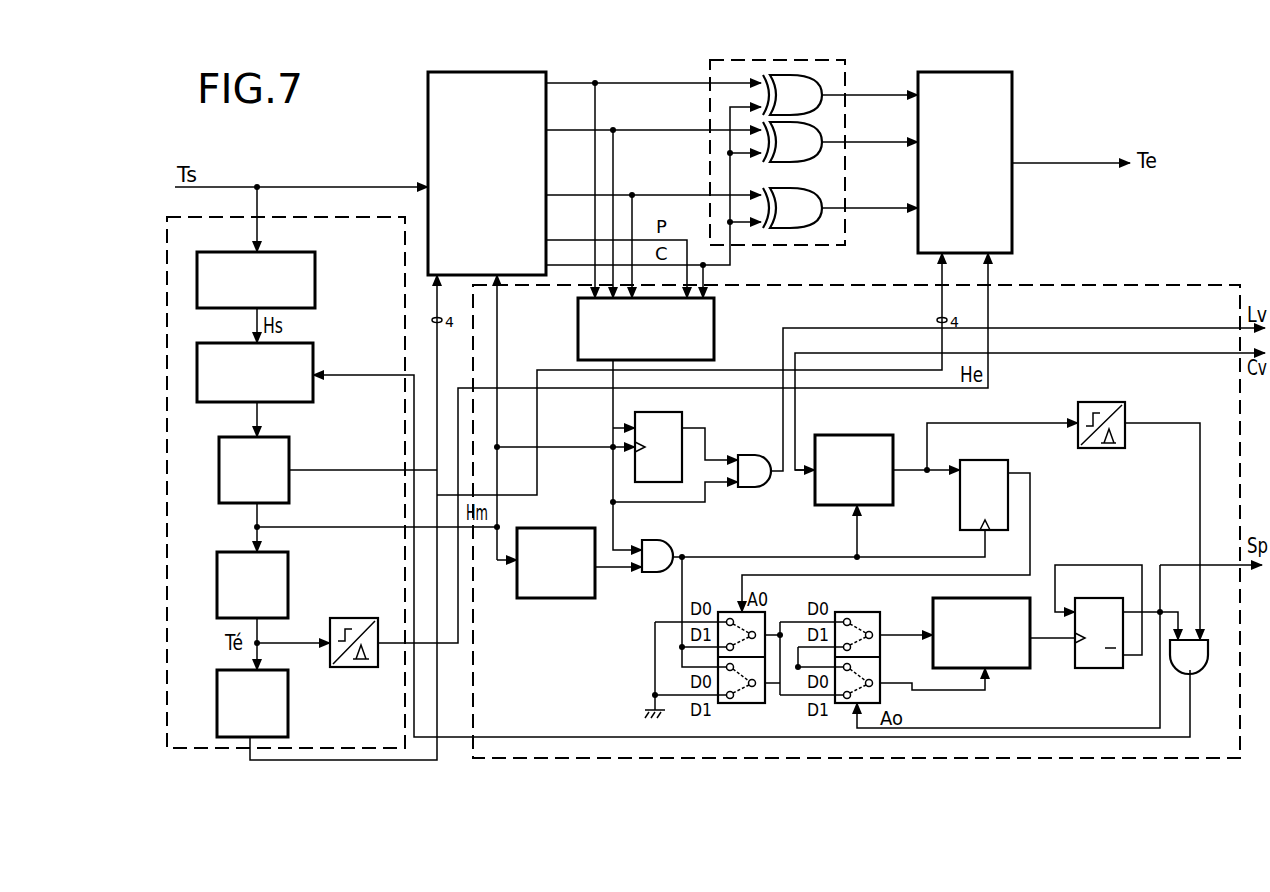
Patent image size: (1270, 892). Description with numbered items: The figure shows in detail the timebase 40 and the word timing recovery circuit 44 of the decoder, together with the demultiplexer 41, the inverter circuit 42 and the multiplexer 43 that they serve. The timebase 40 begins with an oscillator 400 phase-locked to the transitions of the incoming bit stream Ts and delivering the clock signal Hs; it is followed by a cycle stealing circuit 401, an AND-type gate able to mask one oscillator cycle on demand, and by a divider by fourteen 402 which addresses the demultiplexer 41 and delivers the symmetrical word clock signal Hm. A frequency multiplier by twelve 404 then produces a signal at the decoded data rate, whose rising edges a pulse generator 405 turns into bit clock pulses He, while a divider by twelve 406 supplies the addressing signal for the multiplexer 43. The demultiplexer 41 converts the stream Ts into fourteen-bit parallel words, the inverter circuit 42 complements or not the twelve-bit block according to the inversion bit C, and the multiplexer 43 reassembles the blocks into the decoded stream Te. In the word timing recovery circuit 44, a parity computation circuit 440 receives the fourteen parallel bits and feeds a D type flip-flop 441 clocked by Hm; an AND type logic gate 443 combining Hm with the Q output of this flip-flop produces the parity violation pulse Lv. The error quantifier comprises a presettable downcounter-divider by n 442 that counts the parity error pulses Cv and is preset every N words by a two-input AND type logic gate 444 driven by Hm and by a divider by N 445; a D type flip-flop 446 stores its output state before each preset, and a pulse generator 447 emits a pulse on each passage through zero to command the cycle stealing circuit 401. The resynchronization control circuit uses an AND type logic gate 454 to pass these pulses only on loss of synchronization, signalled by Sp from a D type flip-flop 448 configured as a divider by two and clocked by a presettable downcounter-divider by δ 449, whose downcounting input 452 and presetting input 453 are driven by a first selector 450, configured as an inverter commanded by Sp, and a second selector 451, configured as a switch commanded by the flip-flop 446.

The timebase 40 is at (347, 247).
The demultiplexer 41 is at (450, 147).
The inverter circuit 42 is at (850, 80).
The multiplexer 43 is at (1000, 102).
The word timing recovery circuit 44 is at (1070, 305).
The oscillator 400 is at (305, 290).
The cycle stealing circuit 401 is at (305, 365).
The divider by fourteen 402 is at (285, 460).
The frequency multiplier by twelve 404 is at (280, 598).
The pulse generator 405 is at (350, 660).
The divider by twelve 406 is at (285, 700).
The parity computation circuit 440 is at (700, 338).
The D type flip-flop 441 is at (668, 412).
The presettable downcounter-divider by n 442 is at (830, 440).
The AND type logic gate 443 is at (752, 478).
The two-input AND type logic gate 444 is at (660, 567).
The divider by N 445 is at (575, 585).
The D type flip-flop 446 is at (967, 497).
The pulse generator 447 is at (1110, 402).
The D type flip-flop 448 is at (1113, 668).
The presettable downcounter-divider by δ 449 is at (1018, 652).
The first selector 450 is at (865, 618).
The second selector 451 is at (755, 698).
The downcounting input 452 is at (908, 636).
The presetting input 453 is at (985, 692).
The AND type logic gate 454 is at (1195, 672).